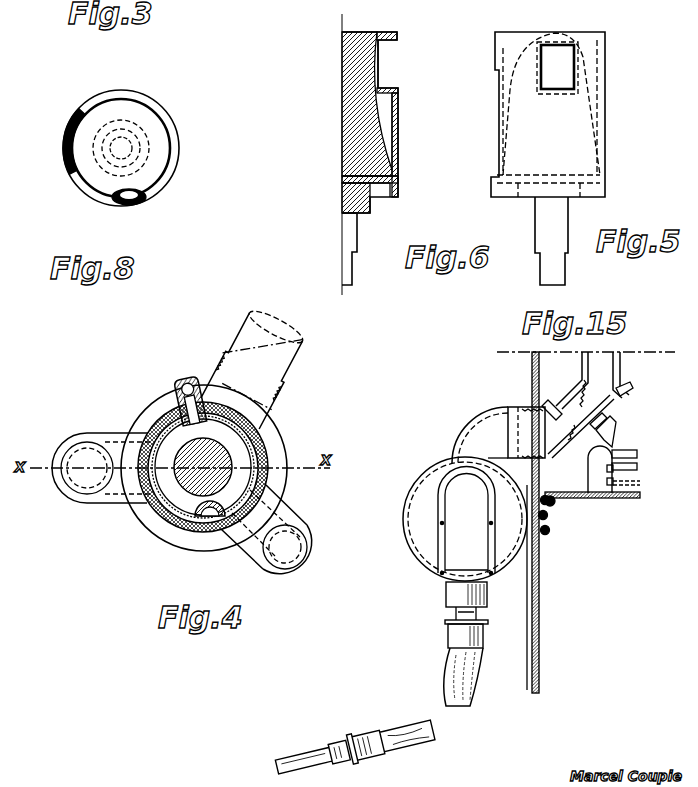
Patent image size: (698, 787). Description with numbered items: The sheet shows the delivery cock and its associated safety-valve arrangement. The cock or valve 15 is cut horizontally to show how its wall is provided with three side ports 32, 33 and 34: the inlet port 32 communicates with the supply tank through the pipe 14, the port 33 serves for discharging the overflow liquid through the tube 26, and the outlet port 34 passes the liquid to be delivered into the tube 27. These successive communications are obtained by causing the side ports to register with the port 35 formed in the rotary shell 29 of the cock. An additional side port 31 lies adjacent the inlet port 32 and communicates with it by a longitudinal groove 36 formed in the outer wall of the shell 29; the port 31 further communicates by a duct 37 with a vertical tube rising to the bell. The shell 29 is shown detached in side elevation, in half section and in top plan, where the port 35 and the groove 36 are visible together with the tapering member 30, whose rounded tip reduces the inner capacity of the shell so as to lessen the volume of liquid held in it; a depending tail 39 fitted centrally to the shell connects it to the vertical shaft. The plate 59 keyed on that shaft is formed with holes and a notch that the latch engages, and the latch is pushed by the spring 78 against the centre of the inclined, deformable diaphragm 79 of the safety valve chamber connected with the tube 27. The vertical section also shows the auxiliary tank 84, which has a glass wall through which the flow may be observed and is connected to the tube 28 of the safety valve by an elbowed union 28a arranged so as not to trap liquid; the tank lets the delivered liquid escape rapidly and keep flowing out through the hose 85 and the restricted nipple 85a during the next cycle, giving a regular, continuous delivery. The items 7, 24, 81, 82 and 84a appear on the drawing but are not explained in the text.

In FIG. 8, the centre line 7 is at (124, 150).
In FIG. 4, the pipe 14 is at (283, 361).
In FIG. 4, the cock or valve 15 is at (167, 517).
In FIG. 15, the support rod 24 is at (540, 578).
In FIG. 4, the tube 26 is at (283, 530).
In FIG. 4, the tube 27 is at (70, 490).
In FIG. 15, the tube 27 is at (597, 360).
In FIG. 15, the tube of the safety valve 28 is at (520, 416).
In FIG. 15, the elbowed union 28a is at (485, 432).
In FIG. 8, the rotary shell 29 is at (152, 105).
In FIG. 6, the rotary shell 29 is at (392, 180).
In FIG. 5, the rotary shell 29 is at (608, 127).
In FIG. 4, the rotary shell 29 is at (267, 447).
In FIG. 6, the tapering member 30 is at (343, 38).
In FIG. 5, the tapering member 30 is at (523, 50).
In FIG. 4, the additional side port 31 is at (192, 423).
In FIG. 4, the inlet port 32 is at (258, 427).
In FIG. 4, the outlet port of the overflow tube 33 is at (253, 487).
In FIG. 4, the outlet port 34 is at (150, 497).
In FIG. 8, the port 35 is at (66, 146).
In FIG. 5, the port 35 is at (500, 85).
In FIG. 4, the port 35 is at (140, 463).
In FIG. 8, the groove 36 is at (140, 198).
In FIG. 6, the groove 36 is at (390, 55).
In FIG. 5, the groove 36 is at (563, 72).
In FIG. 4, the groove 36 is at (216, 530).
In FIG. 4, the duct 37 is at (187, 384).
In FIG. 8, the depending tail 39 is at (133, 134).
In FIG. 6, the depending tail 39 is at (352, 228).
In FIG. 5, the depending tail 39 is at (535, 220).
In FIG. 15, the rotary plate 59 is at (637, 453).
In FIG. 15, the spring 78 is at (612, 432).
In FIG. 15, the inclined deformable diaphragm 79 is at (600, 415).
In FIG. 15, the pipe 81 is at (577, 388).
In FIG. 15, the pipe end 82 is at (628, 394).
In FIG. 15, the auxiliary tank 84 is at (503, 575).
In FIG. 15, the frame 84a is at (460, 548).
In FIG. 15, the hose 85 is at (446, 684).
In FIG. 15, the restricted nipple 85a is at (284, 766).